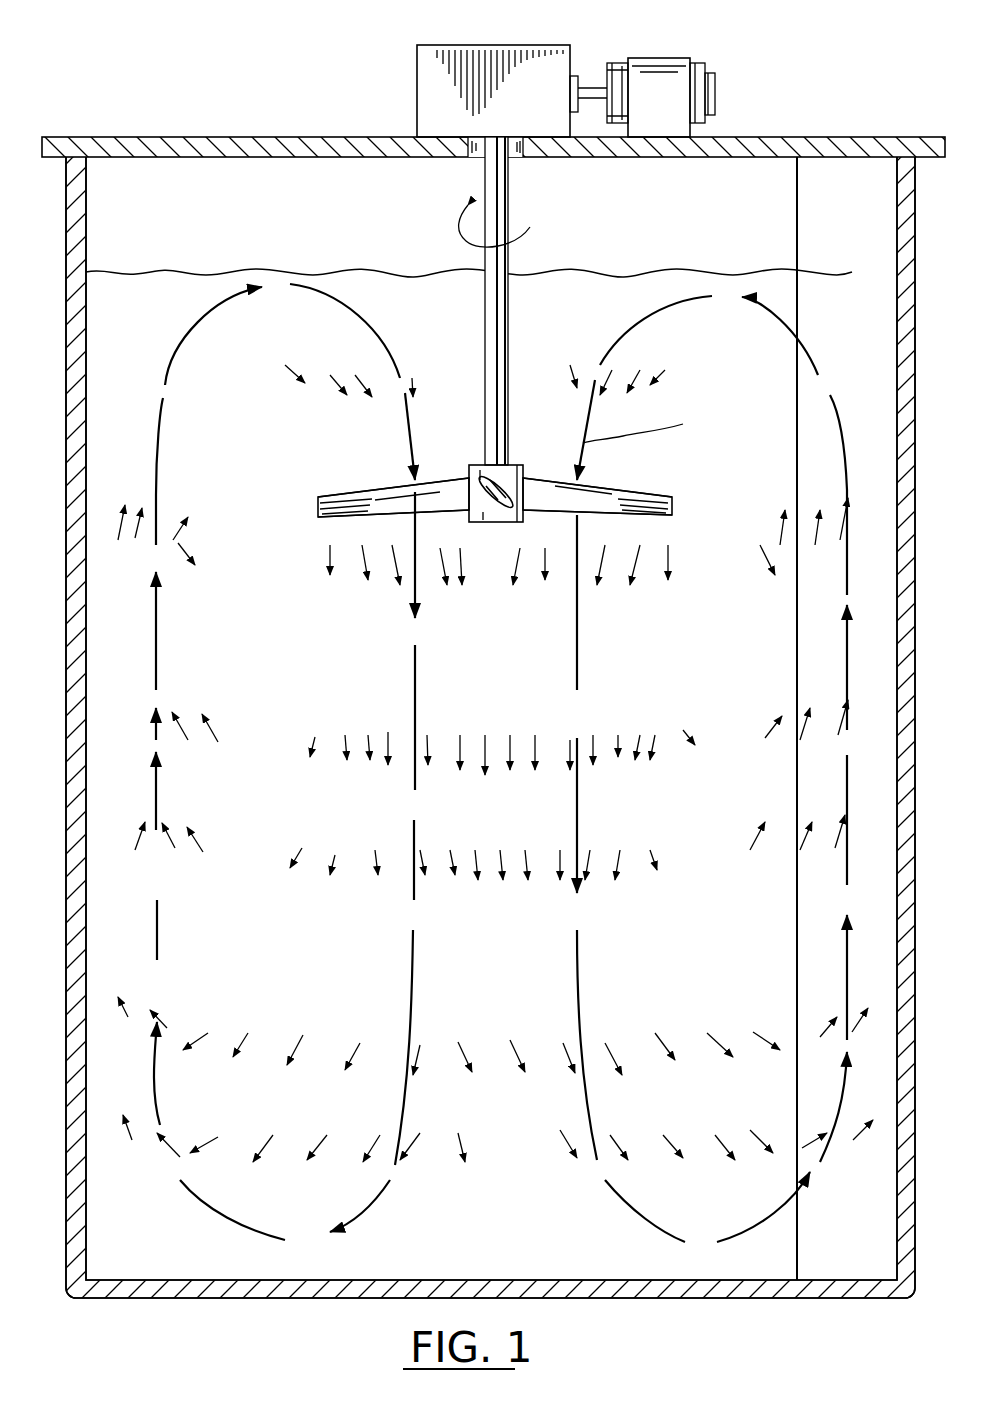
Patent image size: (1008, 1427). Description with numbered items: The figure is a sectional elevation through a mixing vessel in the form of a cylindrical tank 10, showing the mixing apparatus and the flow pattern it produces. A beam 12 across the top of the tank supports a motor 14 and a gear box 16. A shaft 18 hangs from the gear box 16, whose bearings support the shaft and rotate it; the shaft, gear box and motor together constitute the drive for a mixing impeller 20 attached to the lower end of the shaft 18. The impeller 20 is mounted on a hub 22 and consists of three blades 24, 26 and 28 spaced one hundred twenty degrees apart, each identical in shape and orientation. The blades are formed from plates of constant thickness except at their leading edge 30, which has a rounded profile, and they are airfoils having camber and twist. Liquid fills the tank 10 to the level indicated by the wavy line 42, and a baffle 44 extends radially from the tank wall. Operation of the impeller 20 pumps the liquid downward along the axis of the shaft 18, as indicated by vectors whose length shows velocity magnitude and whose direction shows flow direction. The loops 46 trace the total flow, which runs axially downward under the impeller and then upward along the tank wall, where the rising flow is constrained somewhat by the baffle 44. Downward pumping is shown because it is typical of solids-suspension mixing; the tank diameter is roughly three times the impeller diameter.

The cylindrical tank 10 is at (710, 1300).
The beam 12 is at (790, 136).
The motor 14 is at (700, 68).
The gear box 16 is at (413, 69).
The shaft 18 is at (485, 180).
The mixing impeller 20 is at (524, 466).
The hub 22 is at (515, 465).
The blade 24 is at (672, 500).
The blade 26 is at (497, 510).
The blade 28 is at (361, 498).
The leading edge 30 is at (341, 496).
The wavy line 42 is at (614, 272).
The baffle 44 is at (797, 213).
The loops 46 is at (160, 962).